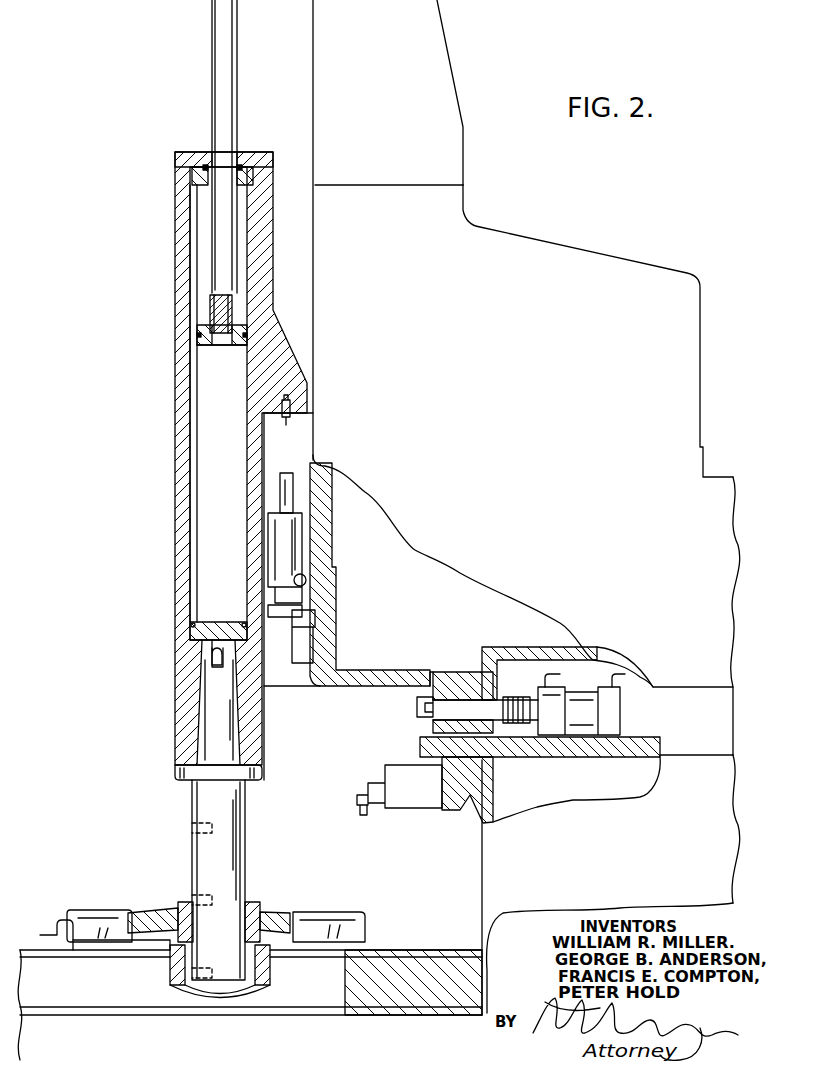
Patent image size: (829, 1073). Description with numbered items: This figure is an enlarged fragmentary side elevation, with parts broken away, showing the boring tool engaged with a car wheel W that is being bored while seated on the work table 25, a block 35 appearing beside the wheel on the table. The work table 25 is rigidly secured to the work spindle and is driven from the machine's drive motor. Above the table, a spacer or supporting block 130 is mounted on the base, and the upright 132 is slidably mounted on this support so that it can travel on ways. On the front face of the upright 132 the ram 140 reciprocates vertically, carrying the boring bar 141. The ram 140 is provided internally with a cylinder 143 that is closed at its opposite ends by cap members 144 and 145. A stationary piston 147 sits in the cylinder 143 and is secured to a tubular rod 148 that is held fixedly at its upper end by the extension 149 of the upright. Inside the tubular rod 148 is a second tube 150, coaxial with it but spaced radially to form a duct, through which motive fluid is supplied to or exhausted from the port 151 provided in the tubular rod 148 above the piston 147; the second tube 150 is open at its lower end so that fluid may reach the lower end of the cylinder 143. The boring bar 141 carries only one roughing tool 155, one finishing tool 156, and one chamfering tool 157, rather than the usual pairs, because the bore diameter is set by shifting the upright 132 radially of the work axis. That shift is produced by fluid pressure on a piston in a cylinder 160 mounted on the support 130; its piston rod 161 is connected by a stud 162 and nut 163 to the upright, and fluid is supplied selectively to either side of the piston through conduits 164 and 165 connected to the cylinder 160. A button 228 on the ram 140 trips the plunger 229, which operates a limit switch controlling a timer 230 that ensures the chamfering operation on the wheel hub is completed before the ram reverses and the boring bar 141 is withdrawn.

The work table 25 is at (350, 962).
The support block 35 is at (57, 935).
The wheel W is at (330, 917).
The spacer or supporting block 130 is at (715, 832).
The upright 132 is at (620, 273).
The ram 140 is at (176, 490).
The boring bar 141 is at (240, 845).
The cylinder 143 is at (190, 565).
The cap member 144 is at (190, 635).
The cap member 145 is at (185, 160).
The stationary piston 147 is at (197, 340).
The tubular rod 148 is at (237, 118).
The extension 149 is at (437, 40).
The second tube 150 is at (212, 348).
The port 151 is at (210, 318).
The roughing tool 155 is at (190, 985).
The finishing tool 156 is at (190, 900).
The chamfering tool 157 is at (190, 833).
The cylinder 160 is at (582, 737).
The piston rod 161 is at (530, 697).
The stud 162 is at (435, 716).
The nut 163 is at (485, 665).
The conduit 164 is at (620, 672).
The conduit 165 is at (558, 676).
The button 228 is at (289, 422).
The plunger 229 is at (298, 540).
The timer 230 is at (300, 664).